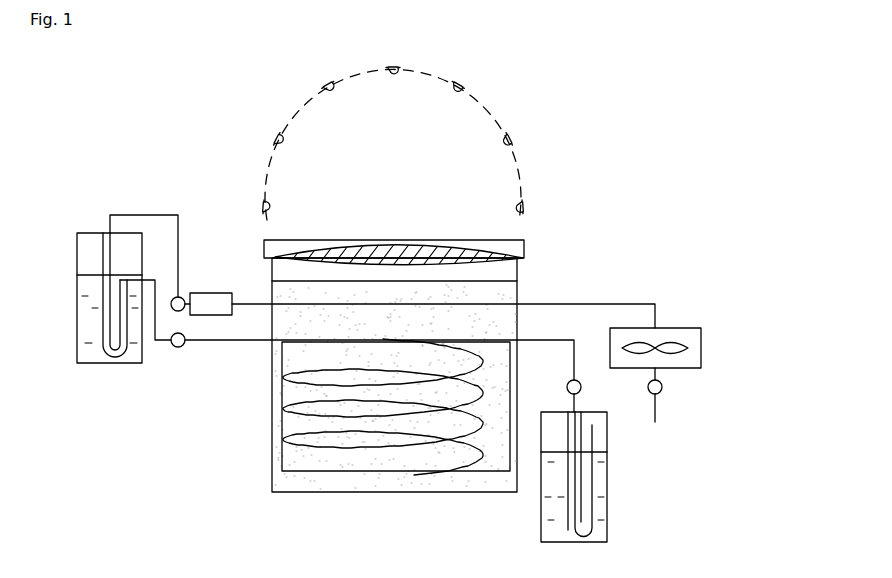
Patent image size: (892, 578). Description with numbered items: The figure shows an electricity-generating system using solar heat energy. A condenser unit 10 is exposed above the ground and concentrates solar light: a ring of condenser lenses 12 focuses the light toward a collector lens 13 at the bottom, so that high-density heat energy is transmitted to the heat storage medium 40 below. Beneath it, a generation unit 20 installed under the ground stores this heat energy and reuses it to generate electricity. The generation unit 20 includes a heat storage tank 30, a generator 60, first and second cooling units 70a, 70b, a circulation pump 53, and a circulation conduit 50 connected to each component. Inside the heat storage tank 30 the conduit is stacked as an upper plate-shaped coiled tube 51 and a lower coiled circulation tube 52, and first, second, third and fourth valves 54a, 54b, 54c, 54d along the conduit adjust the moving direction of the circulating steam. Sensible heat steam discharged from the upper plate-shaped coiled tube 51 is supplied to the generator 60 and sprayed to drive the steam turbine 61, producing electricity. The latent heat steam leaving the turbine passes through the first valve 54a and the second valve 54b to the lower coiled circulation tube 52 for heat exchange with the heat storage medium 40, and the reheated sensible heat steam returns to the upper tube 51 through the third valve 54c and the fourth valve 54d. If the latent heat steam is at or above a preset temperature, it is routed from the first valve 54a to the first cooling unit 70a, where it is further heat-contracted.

The condenser unit 10 is at (518, 120).
The condenser lens 12 is at (463, 86).
The collector lens 13 is at (440, 246).
The generation unit 20 is at (240, 465).
The heat storage tank 30 is at (463, 492).
The heat storage medium 40 is at (422, 475).
The circulation conduit 50 is at (597, 304).
The upper plate-shaped coiled tube 51 is at (470, 300).
The lower coiled circulation tube 52 is at (347, 445).
The circulation pump 53 is at (222, 293).
The first valve 54a is at (660, 393).
The second valve 54b is at (580, 392).
The third valve 54c is at (175, 347).
The fourth valve 54d is at (180, 297).
The generator 60 is at (665, 333).
The steam turbine 61 is at (695, 349).
The first cooling unit 70a is at (607, 510).
The second cooling unit 70b is at (93, 233).